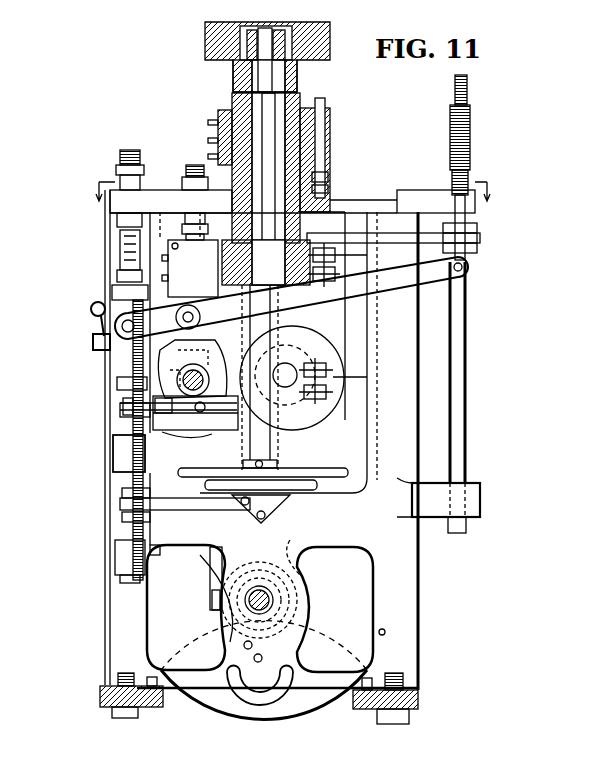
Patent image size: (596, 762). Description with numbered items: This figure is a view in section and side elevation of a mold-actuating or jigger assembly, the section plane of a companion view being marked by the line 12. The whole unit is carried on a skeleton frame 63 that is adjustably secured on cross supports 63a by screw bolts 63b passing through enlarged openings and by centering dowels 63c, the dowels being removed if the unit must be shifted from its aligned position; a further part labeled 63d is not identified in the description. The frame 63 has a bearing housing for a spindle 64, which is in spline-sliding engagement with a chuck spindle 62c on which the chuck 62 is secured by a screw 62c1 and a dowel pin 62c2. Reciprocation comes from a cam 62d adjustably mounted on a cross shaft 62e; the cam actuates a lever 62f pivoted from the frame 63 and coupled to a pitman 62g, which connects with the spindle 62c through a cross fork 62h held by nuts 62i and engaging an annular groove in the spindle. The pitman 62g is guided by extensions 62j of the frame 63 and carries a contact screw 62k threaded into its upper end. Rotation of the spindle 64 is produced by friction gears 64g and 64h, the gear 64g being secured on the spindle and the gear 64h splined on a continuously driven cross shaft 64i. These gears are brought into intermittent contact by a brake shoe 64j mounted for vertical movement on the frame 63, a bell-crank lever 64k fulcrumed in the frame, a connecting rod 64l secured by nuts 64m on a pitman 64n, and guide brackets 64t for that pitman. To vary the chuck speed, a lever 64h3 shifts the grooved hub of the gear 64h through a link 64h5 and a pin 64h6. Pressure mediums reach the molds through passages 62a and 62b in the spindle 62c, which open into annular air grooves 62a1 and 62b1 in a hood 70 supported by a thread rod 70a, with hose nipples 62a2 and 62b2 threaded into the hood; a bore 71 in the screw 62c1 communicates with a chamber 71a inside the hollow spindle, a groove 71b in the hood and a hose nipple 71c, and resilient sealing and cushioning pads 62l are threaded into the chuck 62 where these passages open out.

The section line 12- 12 is at (290, 203).
The chuck 62 is at (205, 45).
The passage 62a is at (235, 72).
The annular registering air groove 62a1 is at (316, 118).
The hose nipple 62a2 is at (230, 102).
The passage 62b is at (292, 78).
The annular registering air groove 62b1 is at (328, 150).
The hose nipple 62b2 is at (218, 122).
The chuck spindle 62c is at (292, 95).
The screw 62c1 is at (281, 30).
The dowel pin 62c2 is at (252, 30).
The cam 62d is at (201, 369).
The cross shaft 62e is at (182, 409).
The lever 62f is at (408, 280).
The pitman 62g is at (468, 352).
The cross fork 62h is at (416, 243).
The nuts 62i is at (478, 240).
The extensions 62j is at (480, 485).
The contact screw 62k is at (467, 84).
The resilient sealing and cushioning pads 62l is at (300, 22).
The skeleton frame 63 is at (420, 660).
The cross supports 63a is at (420, 698).
The screw bolts 63b is at (405, 720).
The centering dowels 63c is at (357, 703).
The arc 63d is at (302, 556).
The spindle 64 is at (300, 432).
The friction gear 64g is at (352, 472).
The friction gear 64h is at (217, 705).
The lever 64h3 is at (212, 552).
The link 64h5 is at (215, 612).
The pin 64h6 is at (222, 641).
The cross shaft 64i is at (270, 598).
The brake shoe 64j is at (350, 480).
The bell-crank lever 64k is at (335, 500).
The connecting rod 64l is at (172, 512).
The nuts 64m is at (122, 506).
The pitman 64n is at (118, 570).
The guide brackets 64t is at (116, 455).
The hood 70 is at (326, 131).
The thread rod 70a is at (325, 192).
The bore 71 is at (276, 92).
The chamber 71a is at (266, 189).
The groove 71b is at (330, 170).
The hose nipple 71c is at (210, 152).